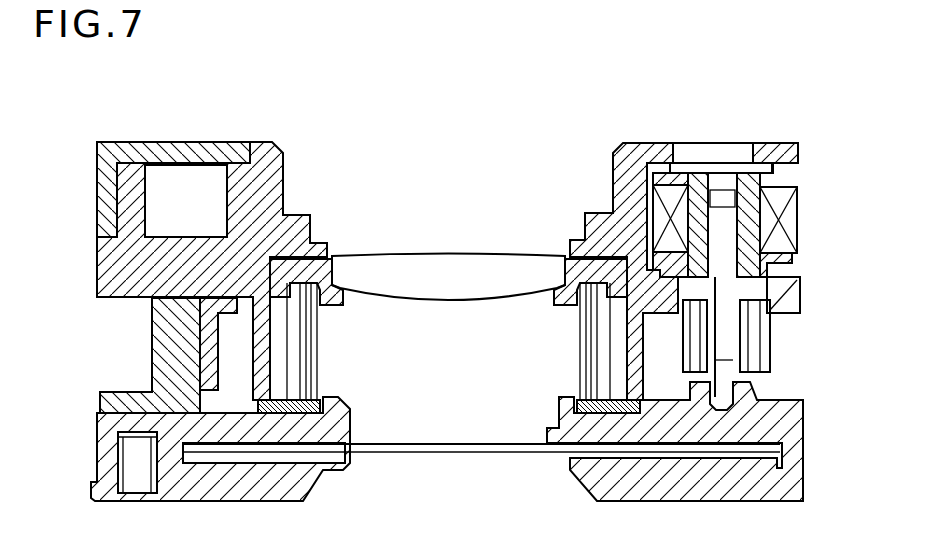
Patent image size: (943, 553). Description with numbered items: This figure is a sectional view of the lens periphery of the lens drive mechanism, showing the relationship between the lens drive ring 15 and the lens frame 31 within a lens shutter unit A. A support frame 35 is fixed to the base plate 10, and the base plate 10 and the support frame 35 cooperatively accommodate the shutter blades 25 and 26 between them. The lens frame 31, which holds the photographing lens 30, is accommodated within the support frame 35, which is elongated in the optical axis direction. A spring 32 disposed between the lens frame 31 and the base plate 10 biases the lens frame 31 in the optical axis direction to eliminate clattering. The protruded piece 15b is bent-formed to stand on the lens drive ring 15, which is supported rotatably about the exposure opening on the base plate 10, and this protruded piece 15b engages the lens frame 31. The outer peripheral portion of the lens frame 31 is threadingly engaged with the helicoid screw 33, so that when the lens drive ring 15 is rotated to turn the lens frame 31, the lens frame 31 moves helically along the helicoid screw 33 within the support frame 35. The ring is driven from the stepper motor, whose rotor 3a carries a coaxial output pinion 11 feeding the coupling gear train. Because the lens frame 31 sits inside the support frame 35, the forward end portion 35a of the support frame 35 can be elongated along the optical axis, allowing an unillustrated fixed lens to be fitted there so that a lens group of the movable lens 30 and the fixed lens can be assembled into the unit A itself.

The base plate 10 is at (805, 427).
The output pinion 11 is at (767, 352).
The lens drive ring 15 is at (580, 398).
The protruded piece 15b is at (318, 373).
The shutter blade 25 is at (442, 443).
The shutter blade 26 is at (470, 453).
The photographing lens 30 is at (443, 253).
The lens frame 31 is at (568, 255).
The spring 32 is at (320, 315).
The helicoid screw 33 is at (273, 338).
The support frame 35 is at (285, 168).
The forward end portion 35a is at (613, 170).
The rotor 3a is at (727, 143).
The lens shutter unit A is at (666, 112).